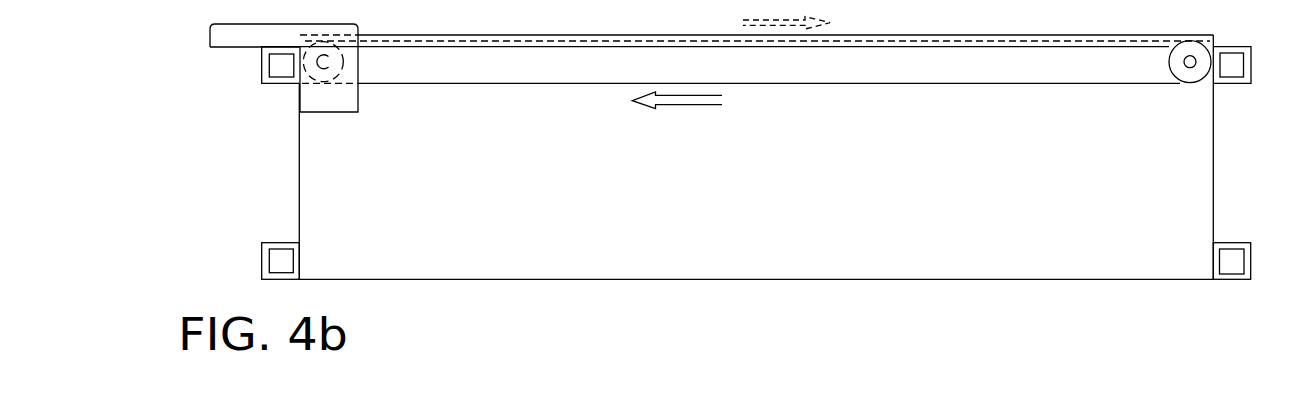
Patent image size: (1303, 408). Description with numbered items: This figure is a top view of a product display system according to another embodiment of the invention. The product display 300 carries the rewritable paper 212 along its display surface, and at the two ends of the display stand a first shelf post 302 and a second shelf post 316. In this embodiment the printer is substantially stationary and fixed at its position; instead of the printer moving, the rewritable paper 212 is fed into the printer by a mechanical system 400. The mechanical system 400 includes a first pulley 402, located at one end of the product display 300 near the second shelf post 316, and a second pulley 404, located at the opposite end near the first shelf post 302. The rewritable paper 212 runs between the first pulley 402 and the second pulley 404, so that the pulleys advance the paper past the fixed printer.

The product display 300 is at (1185, 172).
The first shelf post 302 is at (1232, 84).
The second shelf post 316 is at (262, 83).
The mechanical system 400 is at (334, 104).
The first pulley 402 is at (345, 62).
The second pulley 404 is at (1195, 78).
The rewritable paper 212 is at (904, 83).